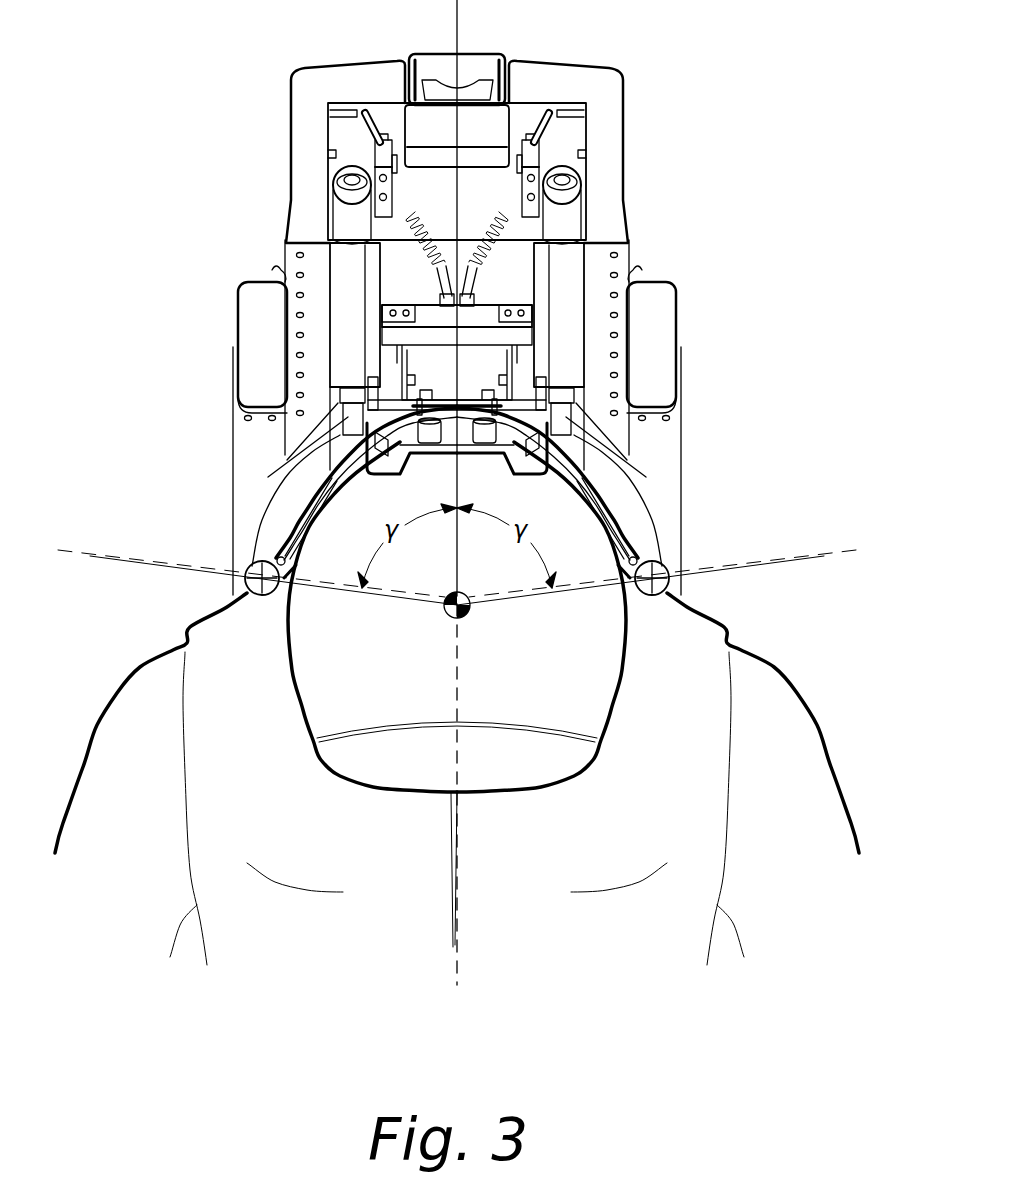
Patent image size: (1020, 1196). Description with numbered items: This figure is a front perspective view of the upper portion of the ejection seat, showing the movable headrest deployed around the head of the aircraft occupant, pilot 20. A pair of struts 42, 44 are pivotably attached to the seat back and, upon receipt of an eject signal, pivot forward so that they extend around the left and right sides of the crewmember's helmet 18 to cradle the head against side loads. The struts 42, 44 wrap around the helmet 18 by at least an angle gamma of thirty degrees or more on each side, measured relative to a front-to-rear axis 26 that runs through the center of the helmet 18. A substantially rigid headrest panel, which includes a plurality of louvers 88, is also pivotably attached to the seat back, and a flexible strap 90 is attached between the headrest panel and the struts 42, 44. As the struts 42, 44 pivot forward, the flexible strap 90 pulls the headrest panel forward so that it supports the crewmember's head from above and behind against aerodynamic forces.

The front-to-rear axis 26 is at (461, 38).
The louvers 88 is at (560, 455).
The flexible strap 90 is at (613, 530).
The strut 42 is at (662, 565).
The strut 44 is at (260, 560).
The helmet 18 is at (317, 683).
The pilot 20 is at (773, 740).